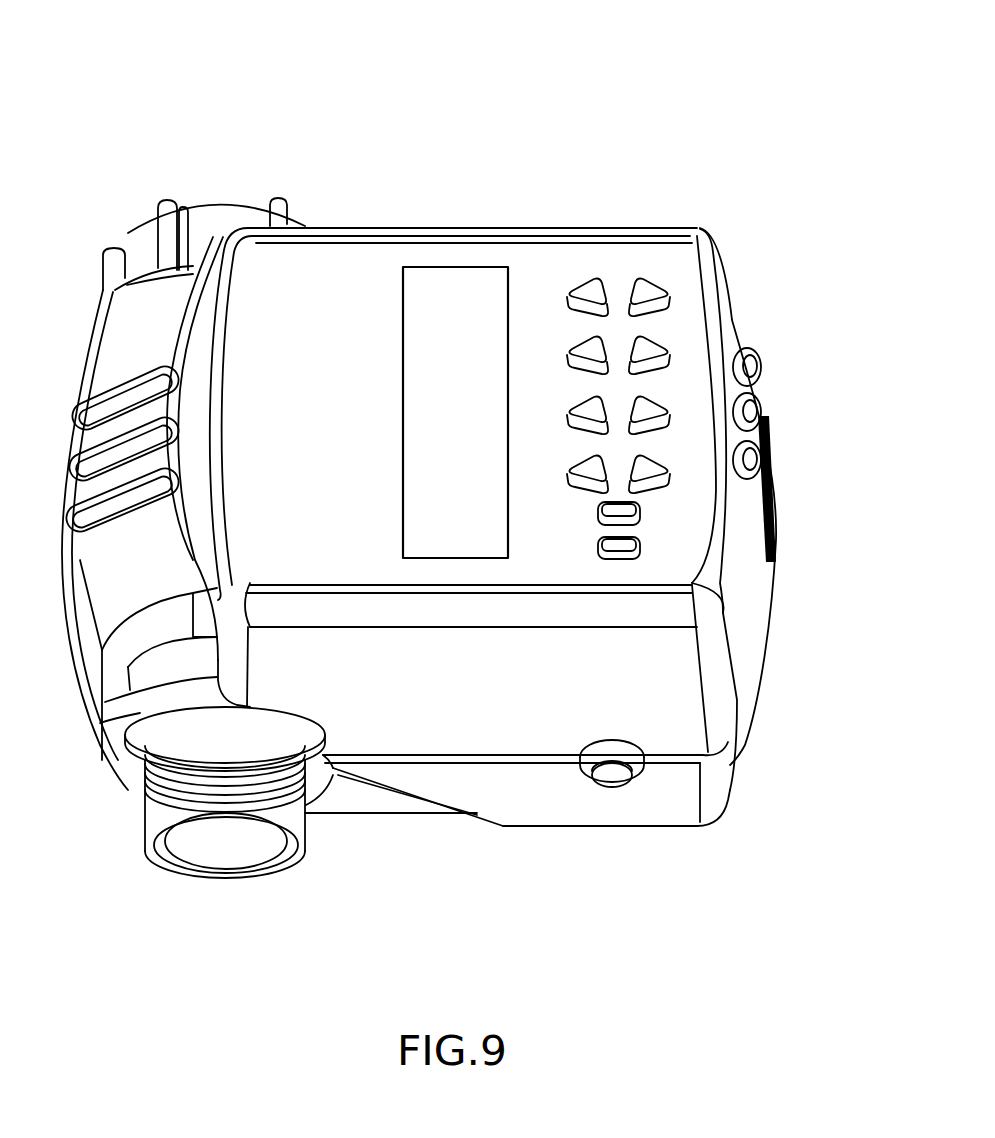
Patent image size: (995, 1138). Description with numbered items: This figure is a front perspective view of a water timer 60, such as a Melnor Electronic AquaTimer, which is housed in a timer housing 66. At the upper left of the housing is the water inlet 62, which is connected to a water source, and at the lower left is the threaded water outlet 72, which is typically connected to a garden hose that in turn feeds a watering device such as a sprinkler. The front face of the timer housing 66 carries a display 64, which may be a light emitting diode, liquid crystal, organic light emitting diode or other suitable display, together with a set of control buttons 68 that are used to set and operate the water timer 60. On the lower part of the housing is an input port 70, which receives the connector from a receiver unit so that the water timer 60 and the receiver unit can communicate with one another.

The water timer 60 is at (133, 86).
The water inlet 62 is at (222, 208).
The display 64 is at (462, 280).
The timer housing 66 is at (714, 250).
The control buttons 68 is at (672, 356).
The input port 70 is at (617, 787).
The water outlet 72 is at (205, 868).